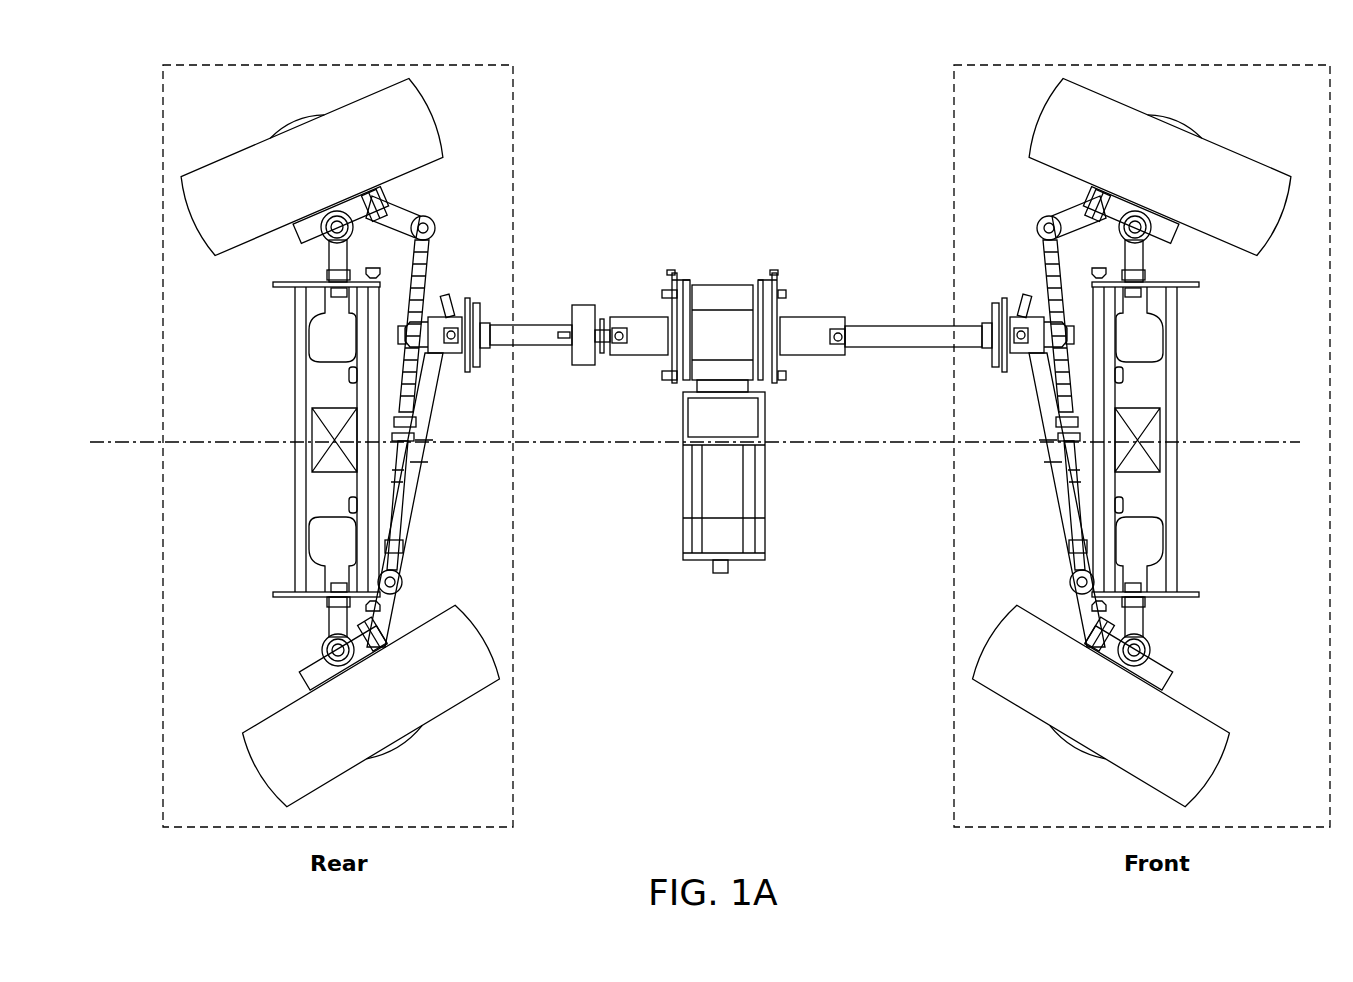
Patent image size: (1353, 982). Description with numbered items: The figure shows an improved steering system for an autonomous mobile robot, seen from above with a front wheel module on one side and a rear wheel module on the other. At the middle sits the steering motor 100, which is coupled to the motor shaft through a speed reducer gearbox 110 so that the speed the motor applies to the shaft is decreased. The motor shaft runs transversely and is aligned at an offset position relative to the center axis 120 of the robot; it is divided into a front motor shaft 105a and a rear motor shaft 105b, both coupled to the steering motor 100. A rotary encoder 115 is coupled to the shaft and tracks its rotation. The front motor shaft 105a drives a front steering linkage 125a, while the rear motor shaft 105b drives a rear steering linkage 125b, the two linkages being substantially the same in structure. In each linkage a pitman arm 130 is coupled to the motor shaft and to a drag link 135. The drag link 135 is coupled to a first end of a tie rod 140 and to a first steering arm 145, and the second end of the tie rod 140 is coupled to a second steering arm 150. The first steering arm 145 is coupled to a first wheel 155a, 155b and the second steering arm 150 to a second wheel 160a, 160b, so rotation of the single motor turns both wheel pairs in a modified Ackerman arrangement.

The steering motor 100 is at (683, 493).
The front motor shaft 105a is at (865, 327).
The rear motor shaft 105b is at (562, 318).
The speed reducer gearbox 110 is at (683, 415).
The rotary encoder 115 is at (583, 305).
The center axis 120 is at (230, 440).
The front steering linkage 125a is at (950, 738).
The rear steering linkage 125b is at (497, 655).
The pitman arm 130 is at (1020, 357).
The drag link 135 is at (1042, 440).
The tie rod 140 is at (1043, 280).
The first steering arm 145 is at (1066, 206).
The second steering arm 150 is at (1072, 582).
The first wheel 155a is at (1234, 90).
The first wheel 155b is at (238, 80).
The second wheel 160a is at (1044, 745).
The second wheel 160b is at (432, 745).